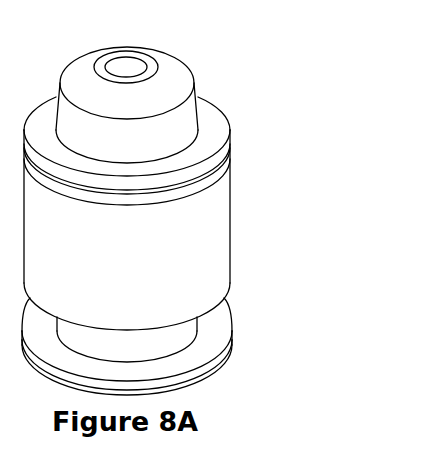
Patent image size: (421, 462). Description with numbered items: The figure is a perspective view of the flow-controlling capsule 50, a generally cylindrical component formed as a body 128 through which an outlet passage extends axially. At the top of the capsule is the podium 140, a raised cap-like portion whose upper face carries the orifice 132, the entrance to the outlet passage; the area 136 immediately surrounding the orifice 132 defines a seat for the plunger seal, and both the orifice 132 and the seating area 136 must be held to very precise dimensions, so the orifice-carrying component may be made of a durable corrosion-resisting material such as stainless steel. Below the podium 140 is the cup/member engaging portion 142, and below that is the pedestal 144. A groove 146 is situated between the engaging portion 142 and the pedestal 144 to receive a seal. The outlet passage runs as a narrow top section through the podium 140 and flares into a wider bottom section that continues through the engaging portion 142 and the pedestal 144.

The flow-controlling capsule 50 is at (172, 200).
The body 128 is at (212, 263).
The orifice 132 is at (132, 70).
The seating area 136 is at (158, 68).
The podium 140 is at (185, 115).
The cup/member engaging portion 142 is at (205, 198).
The pedestal 144 is at (215, 356).
The groove 146 is at (207, 330).